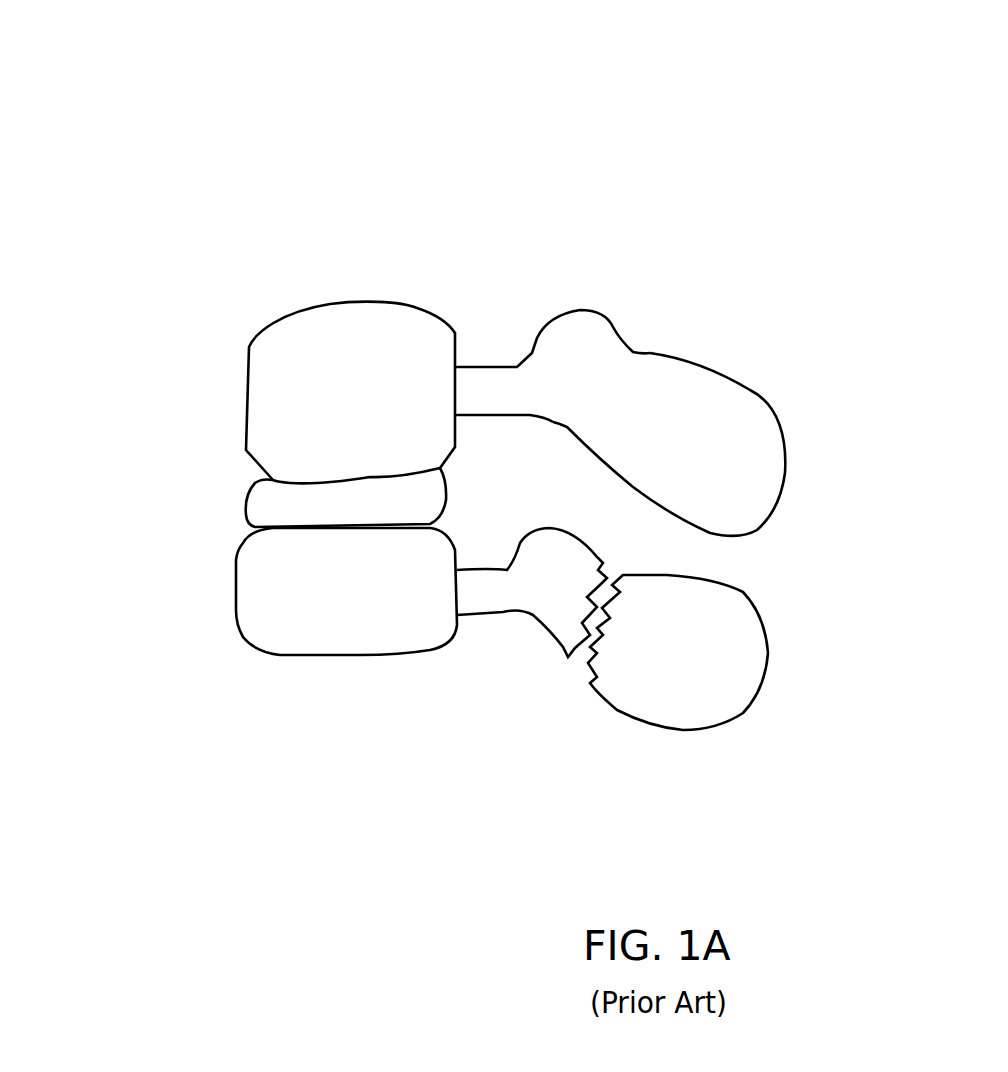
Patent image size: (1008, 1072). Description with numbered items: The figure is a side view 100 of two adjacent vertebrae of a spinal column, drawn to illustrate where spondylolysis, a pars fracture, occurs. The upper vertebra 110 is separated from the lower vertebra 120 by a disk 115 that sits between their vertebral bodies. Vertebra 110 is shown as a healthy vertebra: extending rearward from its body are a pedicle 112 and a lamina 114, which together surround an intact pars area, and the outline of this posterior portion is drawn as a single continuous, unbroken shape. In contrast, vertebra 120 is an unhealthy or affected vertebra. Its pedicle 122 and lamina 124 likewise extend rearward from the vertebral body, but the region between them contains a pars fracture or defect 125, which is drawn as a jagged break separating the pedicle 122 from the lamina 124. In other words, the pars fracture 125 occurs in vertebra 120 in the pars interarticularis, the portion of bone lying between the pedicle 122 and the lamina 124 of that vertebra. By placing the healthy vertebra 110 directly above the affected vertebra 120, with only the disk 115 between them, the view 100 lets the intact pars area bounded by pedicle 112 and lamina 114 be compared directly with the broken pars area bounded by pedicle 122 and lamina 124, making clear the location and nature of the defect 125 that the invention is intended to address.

The side view 100 is at (118, 83).
The vertebra 110 is at (248, 392).
The pedicle 112 is at (497, 363).
The lamina 114 is at (747, 382).
The disk 115 is at (245, 508).
The vertebra 120 is at (235, 610).
The pedicle 122 is at (490, 615).
The lamina 124 is at (667, 730).
The pars fracture or defect 125 is at (637, 400).